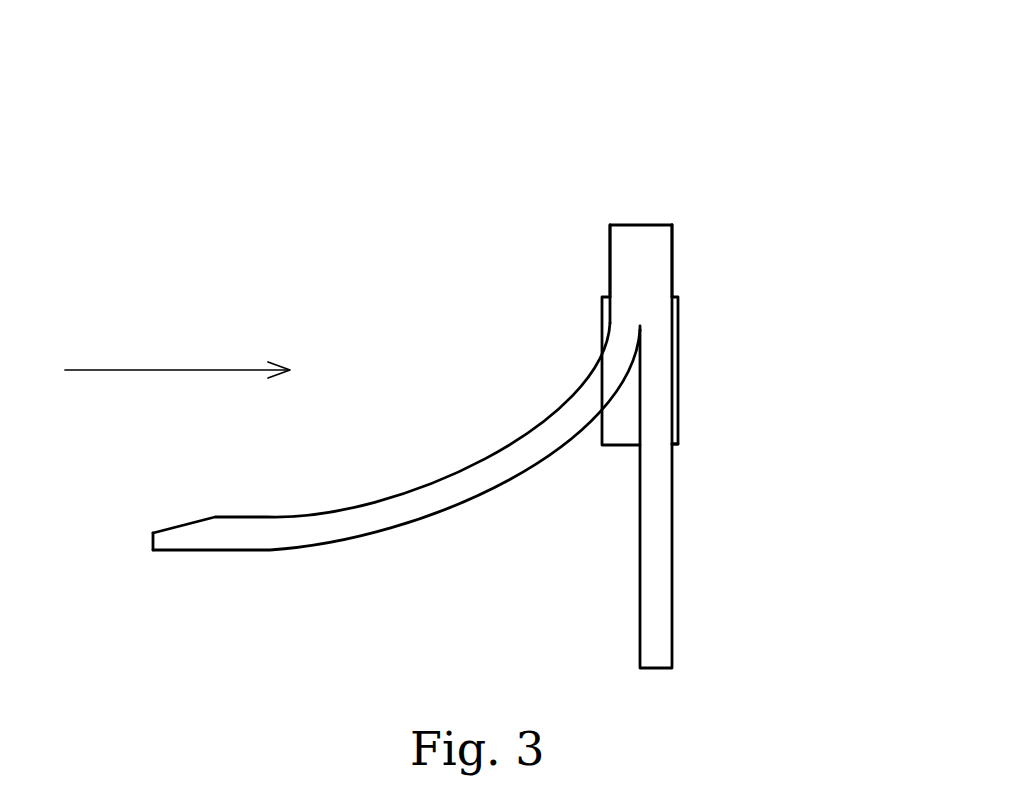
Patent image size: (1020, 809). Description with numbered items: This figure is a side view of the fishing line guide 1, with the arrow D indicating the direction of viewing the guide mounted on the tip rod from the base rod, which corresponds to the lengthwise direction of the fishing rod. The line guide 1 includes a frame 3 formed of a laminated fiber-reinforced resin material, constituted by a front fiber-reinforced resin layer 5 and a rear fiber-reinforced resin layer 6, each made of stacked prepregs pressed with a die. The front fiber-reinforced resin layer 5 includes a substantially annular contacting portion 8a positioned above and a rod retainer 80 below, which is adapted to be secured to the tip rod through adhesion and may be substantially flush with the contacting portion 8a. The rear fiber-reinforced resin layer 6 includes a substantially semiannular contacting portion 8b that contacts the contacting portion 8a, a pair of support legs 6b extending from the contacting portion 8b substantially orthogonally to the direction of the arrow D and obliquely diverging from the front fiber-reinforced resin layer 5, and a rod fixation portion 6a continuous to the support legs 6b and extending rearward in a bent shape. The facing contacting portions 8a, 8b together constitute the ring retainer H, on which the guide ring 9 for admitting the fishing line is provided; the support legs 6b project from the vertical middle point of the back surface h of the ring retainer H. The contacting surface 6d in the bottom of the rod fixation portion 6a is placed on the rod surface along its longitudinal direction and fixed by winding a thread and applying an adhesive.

The line guide 1 is at (770, 118).
The frame 3 is at (351, 378).
The front fiber-reinforced resin layer 5 is at (686, 444).
The rear fiber-reinforced resin layer 6 is at (511, 442).
The rod fixation portion 6a is at (233, 528).
The support legs 6b is at (422, 510).
The contacting surface 6d is at (219, 551).
The contacting portion 8a is at (673, 287).
The contacting portion 8b is at (609, 268).
The guide ring 9 is at (630, 427).
The rod retainer 80 is at (673, 593).
The back surface h is at (608, 250).
The ring retainer H is at (646, 262).
The arrow D is at (157, 369).